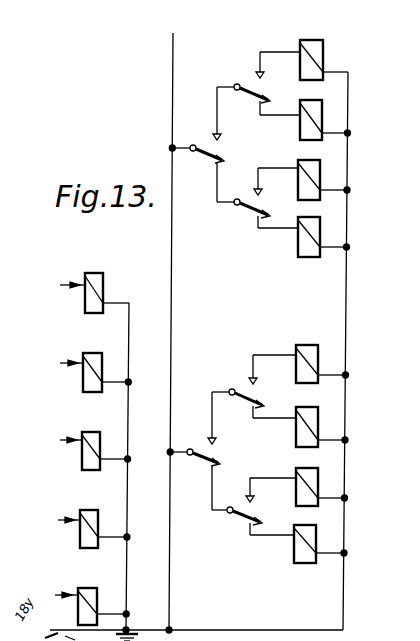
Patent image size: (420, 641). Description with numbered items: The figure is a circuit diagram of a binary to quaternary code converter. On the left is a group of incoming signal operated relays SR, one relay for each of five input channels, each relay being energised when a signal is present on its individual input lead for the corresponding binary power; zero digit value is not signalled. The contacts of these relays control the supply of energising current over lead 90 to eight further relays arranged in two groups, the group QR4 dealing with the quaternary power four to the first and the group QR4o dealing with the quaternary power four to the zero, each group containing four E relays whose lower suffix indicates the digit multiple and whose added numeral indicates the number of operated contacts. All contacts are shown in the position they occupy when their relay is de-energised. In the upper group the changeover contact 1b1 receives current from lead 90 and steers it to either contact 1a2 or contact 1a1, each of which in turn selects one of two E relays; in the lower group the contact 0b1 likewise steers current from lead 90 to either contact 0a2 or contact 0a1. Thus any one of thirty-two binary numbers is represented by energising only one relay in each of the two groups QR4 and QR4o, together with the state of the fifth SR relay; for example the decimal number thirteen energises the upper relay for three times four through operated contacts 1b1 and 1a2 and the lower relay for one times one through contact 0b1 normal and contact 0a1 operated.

The lead 90 is at (173, 66).
The group of incoming signal operated relays SR is at (115, 294).
The relay group for quaternary power 4^1 QR4 is at (344, 54).
The relay group for quaternary power 4^0 QR4o is at (379, 345).
The contact of relay 1A/2 1a2 is at (255, 92).
The contact of relay 1B/1 1b1 is at (211, 144).
The contact of relay 1A/2 1a1 is at (263, 207).
The contact of relay 0A/2 0a2 is at (249, 397).
The contact of relay 0B/1 0b1 is at (206, 451).
The contact of relay 0A/2 0a1 is at (255, 514).